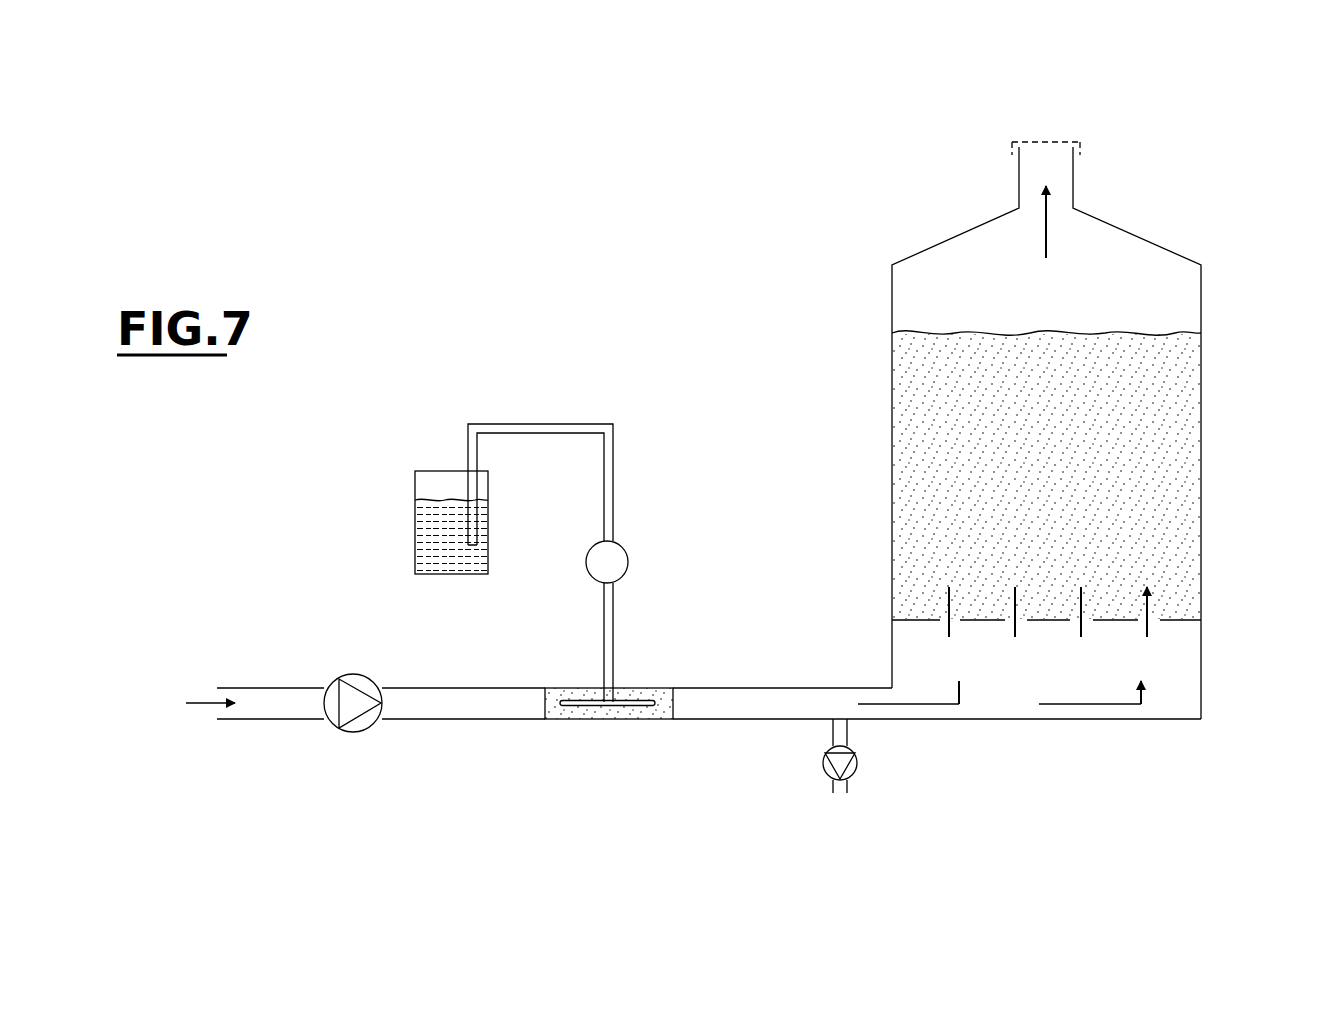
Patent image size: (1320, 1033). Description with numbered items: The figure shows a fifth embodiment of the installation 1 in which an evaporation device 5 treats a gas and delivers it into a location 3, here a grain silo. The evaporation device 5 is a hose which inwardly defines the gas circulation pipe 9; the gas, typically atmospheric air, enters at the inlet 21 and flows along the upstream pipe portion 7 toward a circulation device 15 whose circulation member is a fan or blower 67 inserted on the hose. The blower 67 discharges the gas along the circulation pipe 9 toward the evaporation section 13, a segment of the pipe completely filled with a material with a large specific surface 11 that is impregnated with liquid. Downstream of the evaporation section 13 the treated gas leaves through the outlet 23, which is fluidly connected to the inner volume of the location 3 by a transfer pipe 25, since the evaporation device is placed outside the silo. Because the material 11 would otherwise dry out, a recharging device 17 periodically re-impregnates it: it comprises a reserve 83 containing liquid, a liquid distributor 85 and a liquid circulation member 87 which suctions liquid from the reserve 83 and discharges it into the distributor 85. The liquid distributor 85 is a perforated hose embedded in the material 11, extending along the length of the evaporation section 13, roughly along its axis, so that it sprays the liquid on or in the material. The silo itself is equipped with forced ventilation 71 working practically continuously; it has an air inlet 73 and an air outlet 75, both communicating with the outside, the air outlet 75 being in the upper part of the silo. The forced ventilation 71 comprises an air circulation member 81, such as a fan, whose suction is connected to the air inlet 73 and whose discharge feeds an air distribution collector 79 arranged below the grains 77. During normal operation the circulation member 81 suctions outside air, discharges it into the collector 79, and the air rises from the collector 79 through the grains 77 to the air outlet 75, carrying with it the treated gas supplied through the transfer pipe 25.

The installation 1 is at (435, 185).
The location 3 is at (1055, 448).
The evaporation device 5 is at (327, 642).
The inlet pipe 7 is at (298, 725).
The gas circulation pipe 9 is at (407, 706).
The material with a large specific surface 11 is at (573, 712).
The evaporation section 13 is at (642, 712).
The circulation device 15 is at (352, 745).
The recharging device 17 is at (413, 430).
The inlet 21 is at (272, 710).
The outlet 23 is at (812, 695).
The transfer pipe 25 is at (890, 702).
The fan or blower 67 is at (367, 728).
The forced ventilation 71 is at (824, 771).
The air inlet 73 is at (880, 806).
The air outlet 75 is at (1075, 192).
The grains 77 is at (930, 455).
The air distribution collector 79 is at (985, 719).
The air circulation member 81 is at (858, 763).
The reserve 83 is at (415, 532).
The liquid distributor 85 is at (612, 690).
The liquid circulation member 87 is at (629, 556).